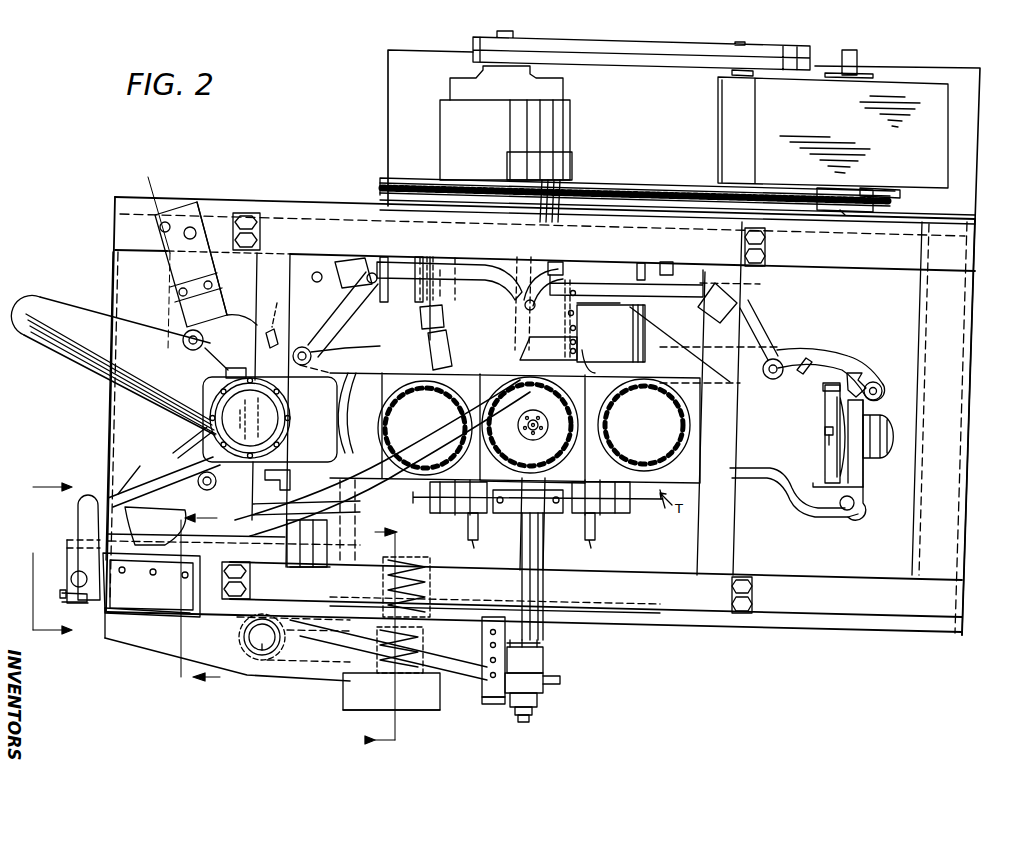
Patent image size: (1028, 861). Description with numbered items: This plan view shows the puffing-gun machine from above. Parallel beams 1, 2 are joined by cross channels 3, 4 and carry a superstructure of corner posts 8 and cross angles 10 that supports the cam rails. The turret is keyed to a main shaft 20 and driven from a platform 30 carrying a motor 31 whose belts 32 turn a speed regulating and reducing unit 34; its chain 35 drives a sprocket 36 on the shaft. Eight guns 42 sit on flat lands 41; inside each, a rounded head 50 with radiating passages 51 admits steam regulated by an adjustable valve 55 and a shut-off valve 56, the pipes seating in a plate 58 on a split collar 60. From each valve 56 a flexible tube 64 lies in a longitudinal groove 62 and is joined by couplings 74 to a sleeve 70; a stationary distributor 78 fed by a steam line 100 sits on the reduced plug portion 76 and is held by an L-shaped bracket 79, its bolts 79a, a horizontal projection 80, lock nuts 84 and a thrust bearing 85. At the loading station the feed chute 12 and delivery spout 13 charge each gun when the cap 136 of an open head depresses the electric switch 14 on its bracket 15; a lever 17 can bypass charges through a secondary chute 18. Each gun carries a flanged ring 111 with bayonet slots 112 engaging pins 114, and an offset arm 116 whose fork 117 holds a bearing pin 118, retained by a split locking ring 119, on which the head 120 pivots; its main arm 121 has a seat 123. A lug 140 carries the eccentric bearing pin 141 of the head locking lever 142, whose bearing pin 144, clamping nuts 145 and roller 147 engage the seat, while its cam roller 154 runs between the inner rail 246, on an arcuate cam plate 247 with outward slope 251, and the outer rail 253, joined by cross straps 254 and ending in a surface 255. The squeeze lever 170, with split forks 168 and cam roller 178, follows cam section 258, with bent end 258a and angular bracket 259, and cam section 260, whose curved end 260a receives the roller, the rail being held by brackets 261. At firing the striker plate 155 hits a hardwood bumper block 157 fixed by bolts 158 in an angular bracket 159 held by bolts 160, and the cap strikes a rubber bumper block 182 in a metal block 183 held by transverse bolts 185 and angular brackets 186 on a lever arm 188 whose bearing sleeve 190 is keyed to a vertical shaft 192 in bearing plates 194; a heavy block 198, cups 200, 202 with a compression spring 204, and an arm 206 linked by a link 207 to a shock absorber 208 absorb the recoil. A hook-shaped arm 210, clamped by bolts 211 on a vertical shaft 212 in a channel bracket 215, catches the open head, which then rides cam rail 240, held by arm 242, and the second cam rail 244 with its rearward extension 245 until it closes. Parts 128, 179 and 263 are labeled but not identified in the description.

The beam 1 is at (868, 630).
The beam 2 is at (972, 247).
The cross channel 3 is at (123, 274).
The cross channel 4 is at (960, 477).
The vertical corner posts 8 is at (272, 208).
The horizontal cross angles 10 is at (325, 209).
The feed chute 12 is at (283, 404).
The delivery spout 13 is at (338, 428).
The electric switch 14 is at (315, 522).
The bracket 15 is at (318, 565).
The lever 17 is at (278, 480).
The secondary chute 18 is at (147, 178).
The main shaft 20 is at (539, 215).
The platform 30 is at (975, 183).
The motor 31 is at (571, 128).
The belts 32 is at (633, 44).
The speed regulating and reducing unit 34 is at (893, 90).
The chain 35 is at (688, 190).
The sprocket 36 is at (630, 187).
The flat lands 41 is at (500, 385).
The guns 42 is at (352, 378).
The rounded head 50 is at (548, 428).
The passages 51 is at (533, 440).
The adjustable valve 55 is at (462, 510).
The second valve 56 is at (473, 538).
The plate 58 is at (565, 505).
The split collar 60 is at (510, 455).
The longitudinal grooves 62 is at (525, 530).
The flexible tube 64 is at (505, 530).
The sleeve 70 is at (543, 660).
The couplings 74 is at (543, 645).
The reduced portion 76 is at (524, 722).
The distributor 78 is at (543, 690).
The L-shaped bracket 79 is at (488, 690).
The bolts 79a is at (490, 640).
The horizontal projection 80 is at (498, 700).
The lock nuts 84 is at (532, 712).
The thrust bearing 85 is at (537, 703).
The steam line 100 is at (560, 680).
The flanged ring 111 is at (228, 372).
The bayonet slots 112 is at (828, 436).
The pins 114 is at (825, 430).
The offset arm 116 is at (258, 500).
The fork 117 is at (858, 516).
The bearing pin 118 is at (216, 482).
The split locking ring 119 is at (205, 466).
The head 120 is at (900, 421).
The main arm 121 is at (100, 498).
The transverse groove 123 is at (82, 516).
The bar 128 is at (140, 466).
The dome shaped cap 136 is at (160, 530).
The lug 140 is at (335, 348).
The bearing pin 141 is at (308, 348).
The head locking lever 142 is at (385, 350).
The bearing pin 144 is at (213, 362).
The clamping nuts 145 is at (203, 345).
The roller 147 is at (835, 394).
The cam roller 154 is at (448, 350).
The striker plate 155 is at (203, 340).
The bumper block 157 is at (186, 315).
The bolts 158 is at (212, 283).
The angular bracket 159 is at (201, 241).
The bolts 160 is at (192, 227).
The split forks 168 is at (773, 380).
The squeeze lever 170 is at (350, 297).
The cam roller 178 is at (352, 262).
The stop 179 is at (276, 310).
The bumper block 182 is at (138, 578).
The metal block 183 is at (158, 615).
The transverse bolts 185 is at (185, 578).
The angular brackets 186 is at (100, 548).
The lever arm 188 is at (310, 668).
The vertical bearing sleeve 190 is at (260, 653).
The vertical shaft 192 is at (250, 636).
The bearing plates 194 is at (244, 645).
The heavy block of metal 198 is at (428, 712).
The deep cup 200 is at (378, 672).
The second cup 202 is at (432, 560).
The compression shock absorbing spring 204 is at (425, 628).
The arm 206 is at (340, 645).
The link 207 is at (505, 615).
The shock absorber 208 is at (465, 595).
The hook-shaped arm 210 is at (82, 532).
The bolts 211 is at (61, 599).
The vertical shaft 212 is at (73, 576).
The channel shaped bracket 215 is at (103, 620).
The cam rail 240 is at (355, 520).
The arm 242 is at (290, 556).
The second cam rail 244 is at (356, 475).
The rearward extension 245 is at (203, 462).
The rail 246 is at (605, 263).
The cam plate 247 is at (480, 270).
The abrupt outward slope 251 is at (512, 337).
The outer rail 253 is at (594, 373).
The cross straps 254 is at (578, 313).
The surface 255 is at (442, 335).
The cam section 258 is at (438, 270).
The inwardly bent end 258a is at (524, 305).
The angular bracket 259 is at (400, 262).
The cam section 260 is at (645, 265).
The outwardly curved end 260a is at (575, 330).
The brackets 261 is at (590, 262).
The pivot 263 is at (319, 270).